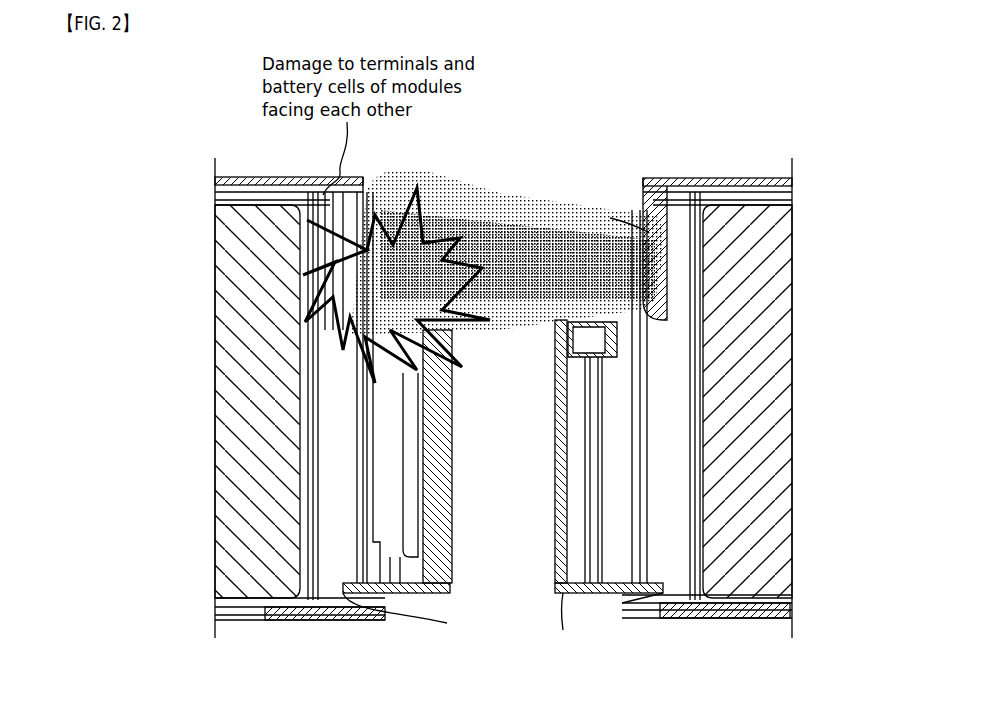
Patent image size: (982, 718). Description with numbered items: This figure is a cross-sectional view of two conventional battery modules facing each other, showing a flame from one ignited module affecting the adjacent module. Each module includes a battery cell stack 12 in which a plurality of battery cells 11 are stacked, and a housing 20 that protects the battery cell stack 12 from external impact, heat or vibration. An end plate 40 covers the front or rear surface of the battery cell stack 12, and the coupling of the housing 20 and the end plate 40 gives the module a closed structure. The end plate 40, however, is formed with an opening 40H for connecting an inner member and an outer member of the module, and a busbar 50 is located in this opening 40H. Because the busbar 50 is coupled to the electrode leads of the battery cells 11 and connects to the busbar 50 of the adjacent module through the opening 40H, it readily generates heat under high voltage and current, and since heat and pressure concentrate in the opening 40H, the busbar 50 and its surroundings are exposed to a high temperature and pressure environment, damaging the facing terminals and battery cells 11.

The battery cell 11 is at (240, 316).
The battery cell stack 12 is at (794, 257).
The housing 20 is at (257, 177).
The end plate 40 is at (565, 600).
The opening 40H is at (628, 233).
The busbar 50 is at (587, 200).